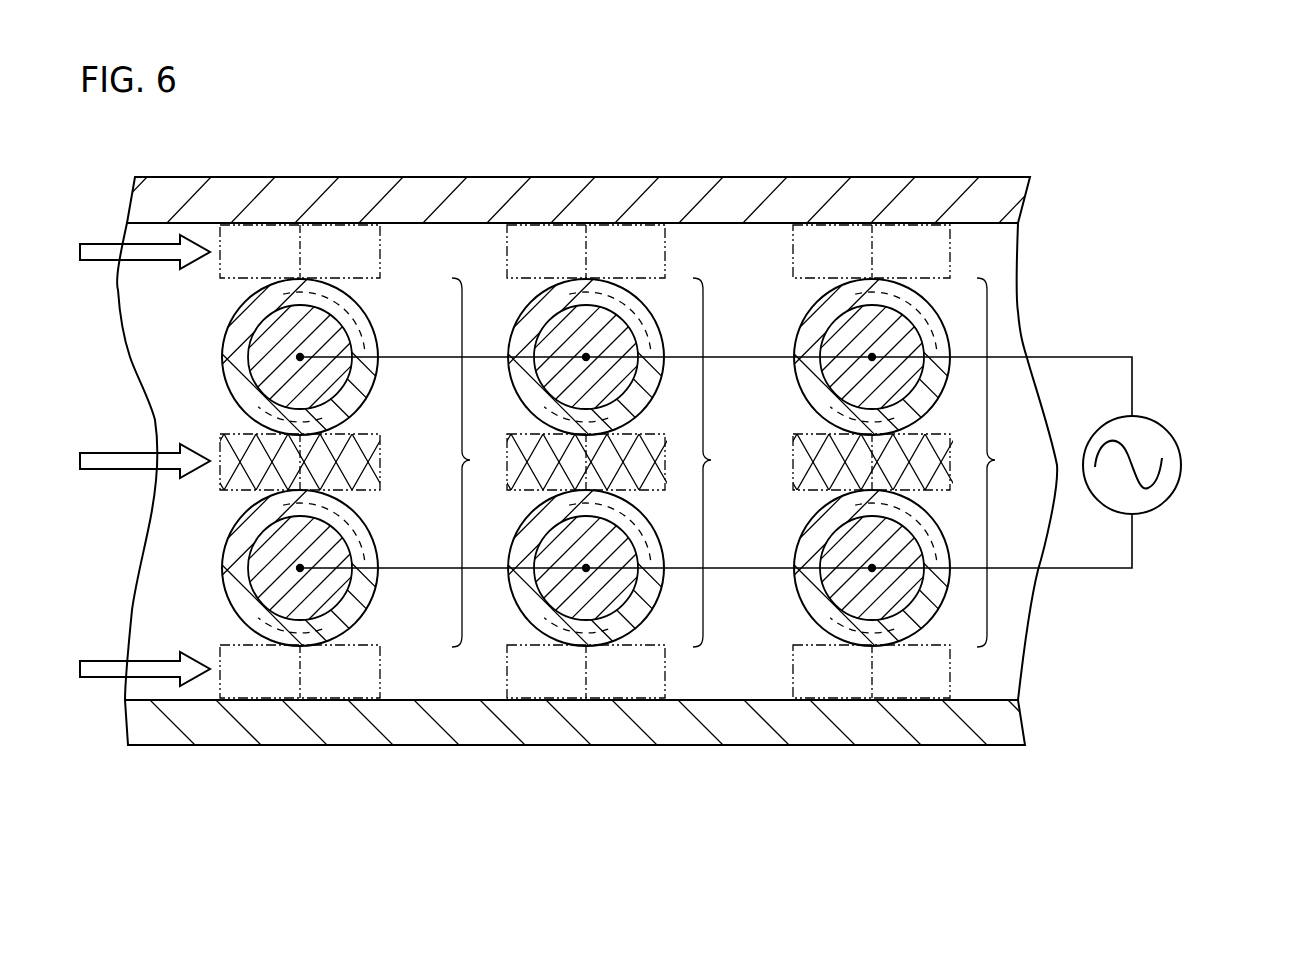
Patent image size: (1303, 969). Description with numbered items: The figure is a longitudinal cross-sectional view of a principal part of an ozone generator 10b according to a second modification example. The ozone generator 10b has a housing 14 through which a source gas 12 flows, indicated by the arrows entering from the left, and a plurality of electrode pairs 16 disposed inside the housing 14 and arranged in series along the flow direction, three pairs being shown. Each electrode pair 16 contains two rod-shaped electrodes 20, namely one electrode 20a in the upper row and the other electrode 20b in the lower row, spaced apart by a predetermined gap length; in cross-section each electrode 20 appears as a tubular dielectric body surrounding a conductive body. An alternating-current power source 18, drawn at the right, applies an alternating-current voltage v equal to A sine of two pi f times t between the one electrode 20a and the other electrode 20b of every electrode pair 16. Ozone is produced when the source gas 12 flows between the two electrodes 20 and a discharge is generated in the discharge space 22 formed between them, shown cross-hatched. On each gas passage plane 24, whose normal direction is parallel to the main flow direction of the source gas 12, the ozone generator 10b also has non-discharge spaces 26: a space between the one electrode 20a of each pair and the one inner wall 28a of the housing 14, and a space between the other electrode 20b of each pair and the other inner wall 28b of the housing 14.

The ozone generator 10b is at (274, 119).
The source gas 12 is at (98, 243).
The housing 14 is at (572, 178).
The electrode pair 16 is at (739, 462).
The alternating-current power source 18 is at (1143, 416).
The electrode 20 is at (586, 462).
The one electrode 20a is at (368, 312).
The other electrode 20b is at (377, 596).
The discharge space 22 is at (228, 433).
The gas passage plane 24 is at (300, 250).
The non-discharge space 26 is at (378, 253).
The one inner wall 28a is at (760, 224).
The other inner wall 28b is at (760, 700).